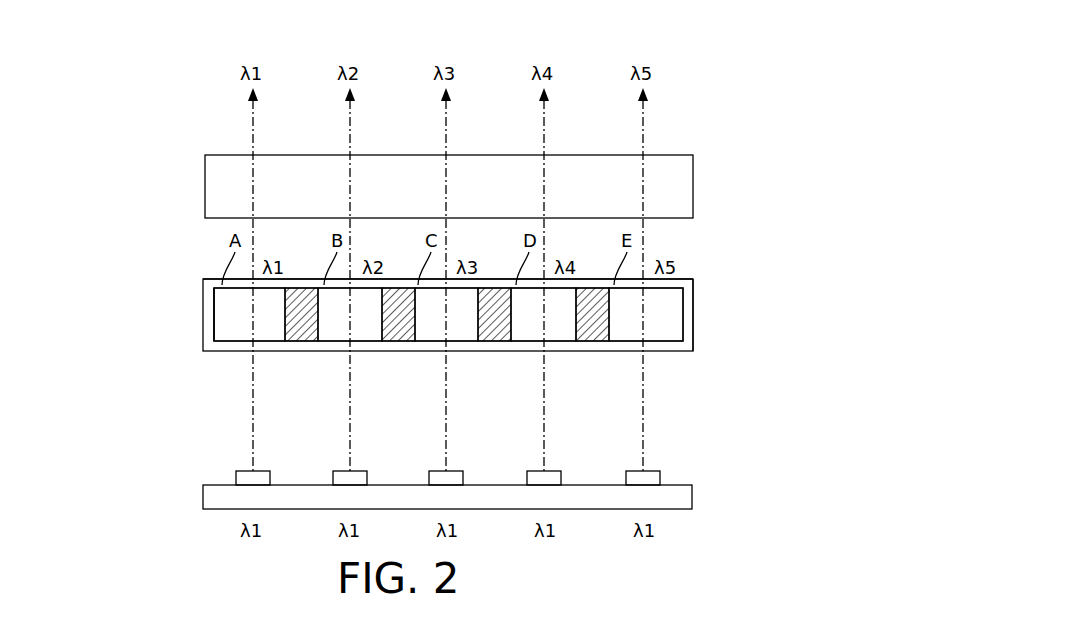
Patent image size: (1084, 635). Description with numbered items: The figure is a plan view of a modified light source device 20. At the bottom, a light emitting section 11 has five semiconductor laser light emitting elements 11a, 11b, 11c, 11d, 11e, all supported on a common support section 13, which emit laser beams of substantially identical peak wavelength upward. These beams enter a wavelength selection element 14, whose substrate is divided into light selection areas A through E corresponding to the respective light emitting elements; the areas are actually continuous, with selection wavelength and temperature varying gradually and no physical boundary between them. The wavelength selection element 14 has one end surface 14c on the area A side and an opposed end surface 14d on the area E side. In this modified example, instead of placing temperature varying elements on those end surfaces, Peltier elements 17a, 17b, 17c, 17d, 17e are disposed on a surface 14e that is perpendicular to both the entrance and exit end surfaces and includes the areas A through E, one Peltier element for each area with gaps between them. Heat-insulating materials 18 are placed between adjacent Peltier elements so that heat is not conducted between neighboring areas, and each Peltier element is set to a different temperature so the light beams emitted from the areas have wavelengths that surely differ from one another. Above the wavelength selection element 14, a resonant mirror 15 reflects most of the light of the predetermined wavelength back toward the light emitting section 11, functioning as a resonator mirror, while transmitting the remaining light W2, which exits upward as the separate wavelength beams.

The light source device 20 is at (678, 60).
The remaining light W2 is at (250, 127).
The resonant mirror 15 is at (685, 168).
The wavelength selection element 14 is at (693, 283).
The end surface 14c is at (203, 305).
The end surface 14d is at (693, 322).
The surface 14e is at (214, 328).
The Peltier element 17a is at (238, 332).
The Peltier element 17b is at (341, 332).
The Peltier element 17c is at (434, 332).
The Peltier element 17d is at (535, 332).
The Peltier element 17e is at (633, 332).
The heat-insulating material 18 is at (297, 340).
The light emitting section 11 is at (432, 471).
The light emitting element 11a is at (268, 482).
The light emitting element 11b is at (365, 482).
The light emitting element 11c is at (462, 482).
The light emitting element 11d is at (560, 482).
The light emitting element 11e is at (659, 482).
The support section 13 is at (692, 497).